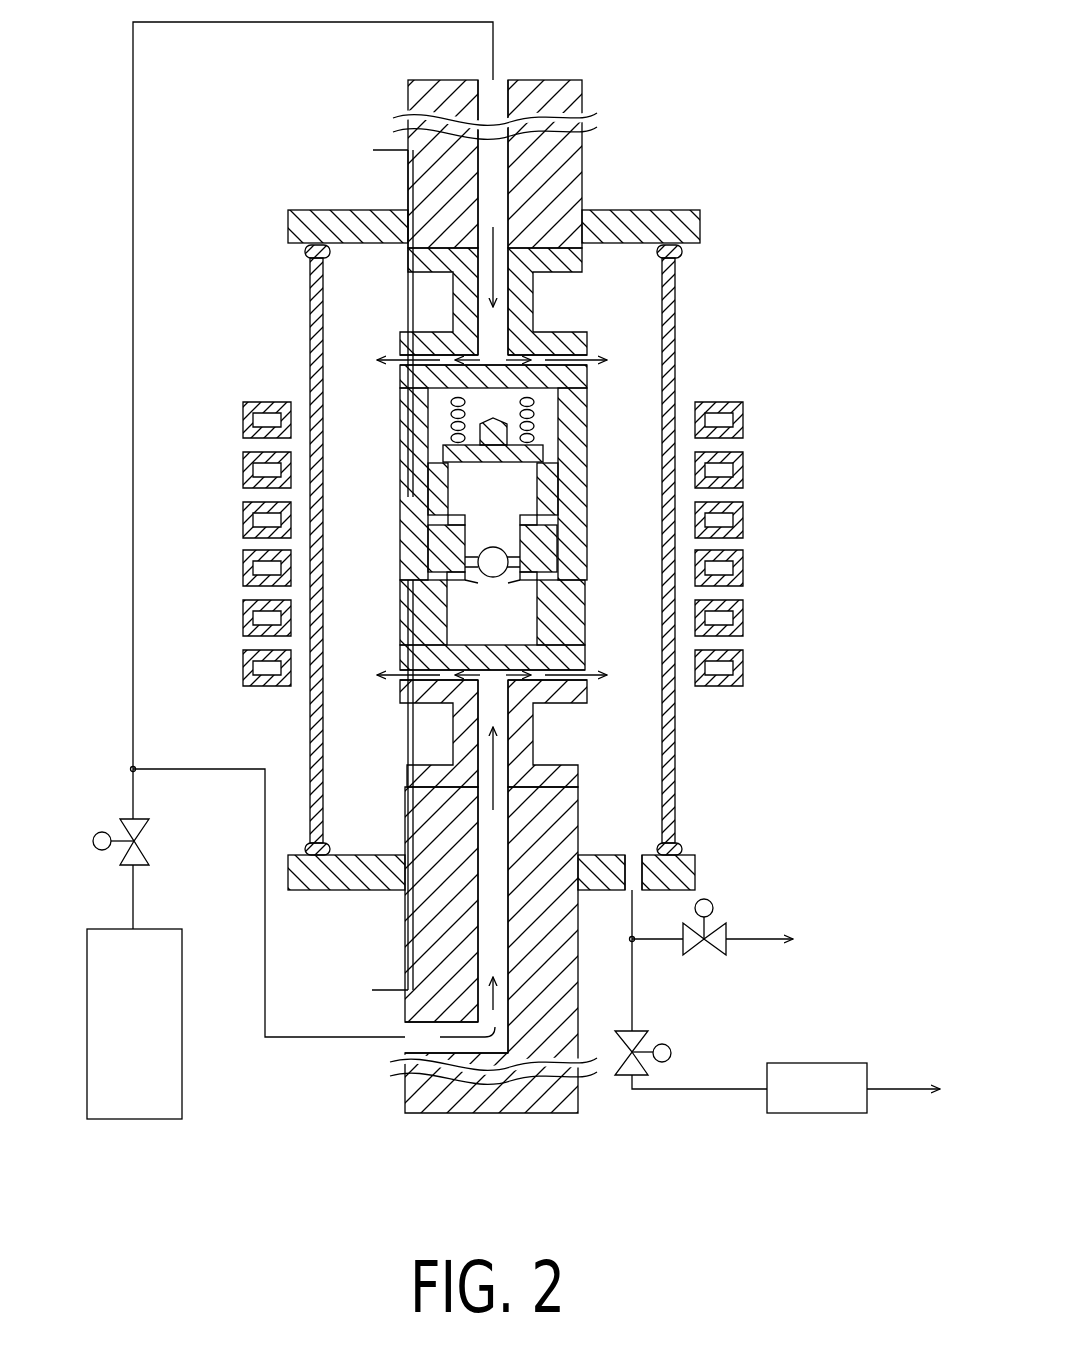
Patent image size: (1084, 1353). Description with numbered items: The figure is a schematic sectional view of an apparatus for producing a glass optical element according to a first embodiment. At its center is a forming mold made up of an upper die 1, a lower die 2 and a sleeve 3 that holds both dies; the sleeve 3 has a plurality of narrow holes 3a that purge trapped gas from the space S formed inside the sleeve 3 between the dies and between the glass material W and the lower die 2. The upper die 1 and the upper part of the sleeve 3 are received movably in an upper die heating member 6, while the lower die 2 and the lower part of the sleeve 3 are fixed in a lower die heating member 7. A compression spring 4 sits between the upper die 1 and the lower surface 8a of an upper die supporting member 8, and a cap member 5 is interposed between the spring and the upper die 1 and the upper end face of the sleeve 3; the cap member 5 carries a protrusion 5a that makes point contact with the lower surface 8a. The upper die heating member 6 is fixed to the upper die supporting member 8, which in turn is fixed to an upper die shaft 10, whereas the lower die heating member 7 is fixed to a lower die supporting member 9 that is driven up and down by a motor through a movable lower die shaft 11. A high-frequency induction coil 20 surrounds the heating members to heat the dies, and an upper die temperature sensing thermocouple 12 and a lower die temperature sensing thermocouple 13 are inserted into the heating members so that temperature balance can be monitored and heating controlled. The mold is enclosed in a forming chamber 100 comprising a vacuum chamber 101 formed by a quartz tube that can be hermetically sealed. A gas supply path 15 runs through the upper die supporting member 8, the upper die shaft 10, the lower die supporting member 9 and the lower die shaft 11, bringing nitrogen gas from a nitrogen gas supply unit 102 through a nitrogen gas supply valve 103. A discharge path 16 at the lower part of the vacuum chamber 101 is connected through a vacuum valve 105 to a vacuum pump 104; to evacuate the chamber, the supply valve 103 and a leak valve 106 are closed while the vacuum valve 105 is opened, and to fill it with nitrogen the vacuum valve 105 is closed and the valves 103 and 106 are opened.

The forming chamber 100 is at (647, 87).
The upper die shaft 10 is at (582, 168).
The upper die temperature sensing thermocouple 12 is at (408, 195).
The upper die supporting member 8 is at (533, 300).
The lower surface of upper die supporting member 8a is at (535, 400).
The compression spring 4 is at (590, 398).
The cap member 5 is at (548, 450).
The protrusion 5a is at (467, 436).
The upper die heating member 6 is at (587, 487).
The sleeve 3 is at (557, 516).
The narrow holes 3a is at (428, 578).
The upper die 1 is at (507, 533).
The glass material W is at (508, 563).
The space S is at (470, 585).
The lower die heating member 7 is at (585, 598).
The lower die 2 is at (545, 634).
The lower die temperature sensing thermocouple 13 is at (413, 732).
The lower die supporting member 9 is at (533, 733).
The vacuum chamber 101 is at (677, 752).
The discharge path 16 is at (632, 870).
The leak valve 106 is at (712, 922).
The vacuum valve 105 is at (645, 1040).
The vacuum pump 104 is at (825, 1063).
The nitrogen gas supply valve 103 is at (148, 825).
The nitrogen gas supply unit 102 is at (135, 1120).
The gas supply path 15 is at (405, 1045).
The lower die shaft 11 is at (491, 1113).
The high-frequency induction coil 20 is at (743, 420).